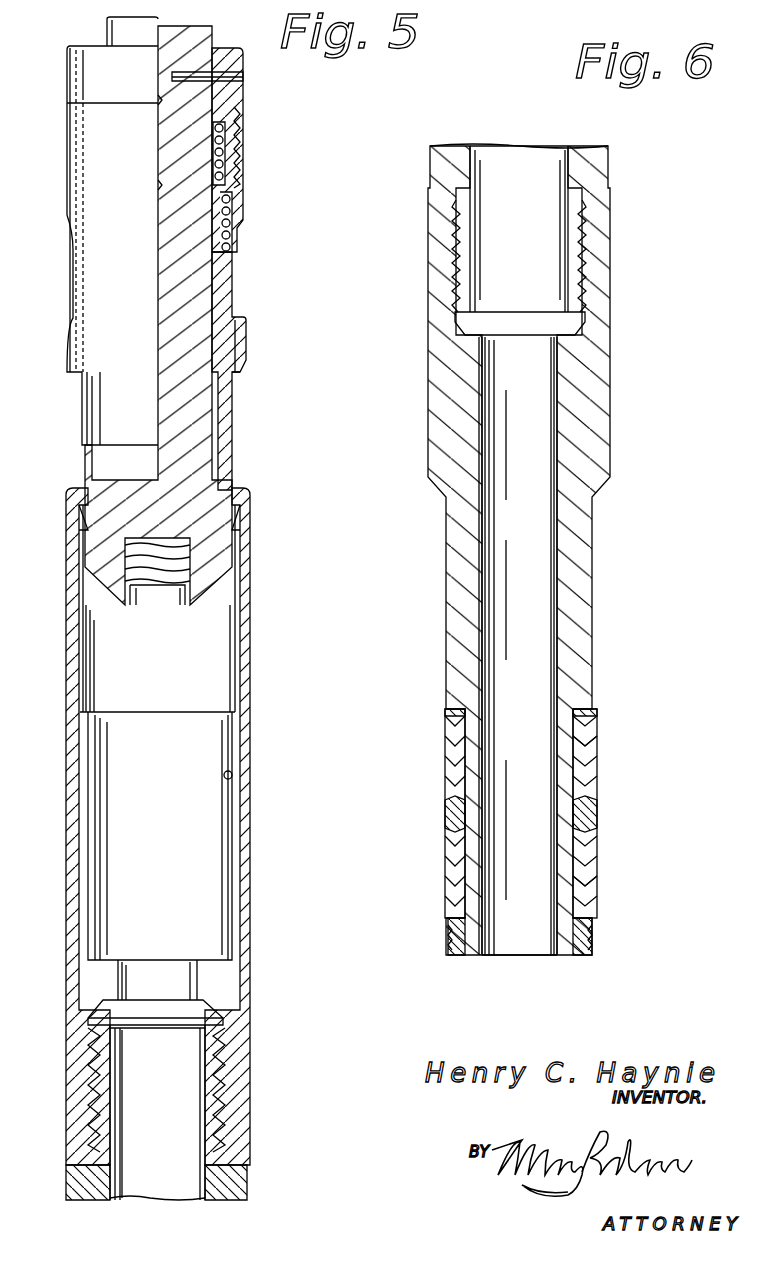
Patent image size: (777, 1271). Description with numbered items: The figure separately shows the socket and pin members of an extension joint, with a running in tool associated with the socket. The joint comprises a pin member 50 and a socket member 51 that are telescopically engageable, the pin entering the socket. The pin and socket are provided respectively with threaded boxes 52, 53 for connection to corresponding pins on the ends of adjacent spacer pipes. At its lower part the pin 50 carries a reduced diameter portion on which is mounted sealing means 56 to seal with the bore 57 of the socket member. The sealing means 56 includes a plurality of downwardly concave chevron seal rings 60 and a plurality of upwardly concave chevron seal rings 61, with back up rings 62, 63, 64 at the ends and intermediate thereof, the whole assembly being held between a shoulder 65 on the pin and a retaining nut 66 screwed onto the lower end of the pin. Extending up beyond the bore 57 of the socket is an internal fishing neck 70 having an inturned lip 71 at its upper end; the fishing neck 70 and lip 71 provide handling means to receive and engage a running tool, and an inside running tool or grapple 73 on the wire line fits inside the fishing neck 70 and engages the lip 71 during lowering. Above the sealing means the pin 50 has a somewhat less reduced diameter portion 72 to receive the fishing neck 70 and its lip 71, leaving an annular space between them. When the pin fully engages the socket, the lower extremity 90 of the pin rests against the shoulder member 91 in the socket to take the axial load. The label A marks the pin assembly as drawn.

In FIG. 5, the inside running tool or grapple 73 is at (95, 165).
In FIG. 5, the inturned lip 71 is at (245, 500).
In FIG. 5, the internal fishing neck 70 is at (248, 637).
In FIG. 5, the bore 57 is at (232, 780).
In FIG. 5, the shoulder member 91 is at (215, 957).
In FIG. 5, the socket member 51 is at (250, 987).
In FIG. 5, the threaded box 53 is at (240, 1115).
In FIG. 6, the pin member 50 is at (613, 428).
In FIG. 6, the assembly A is at (612, 362).
In FIG. 6, the threaded box 52 is at (598, 248).
In FIG. 6, the less reduced diameter portion 72 is at (590, 583).
In FIG. 6, the back up ring 64 is at (446, 716).
In FIG. 6, the back up ring 63 is at (455, 812).
In FIG. 6, the back up ring 62 is at (448, 908).
In FIG. 6, the shoulder 65 is at (598, 718).
In FIG. 6, the downwardly concave chevron seal rings 60 is at (593, 768).
In FIG. 6, the sealing means 56 is at (596, 830).
In FIG. 6, the upwardly concave chevron seal rings 61 is at (593, 878).
In FIG. 6, the retaining nut 66 is at (588, 937).
In FIG. 6, the lower extremity 90 is at (565, 948).